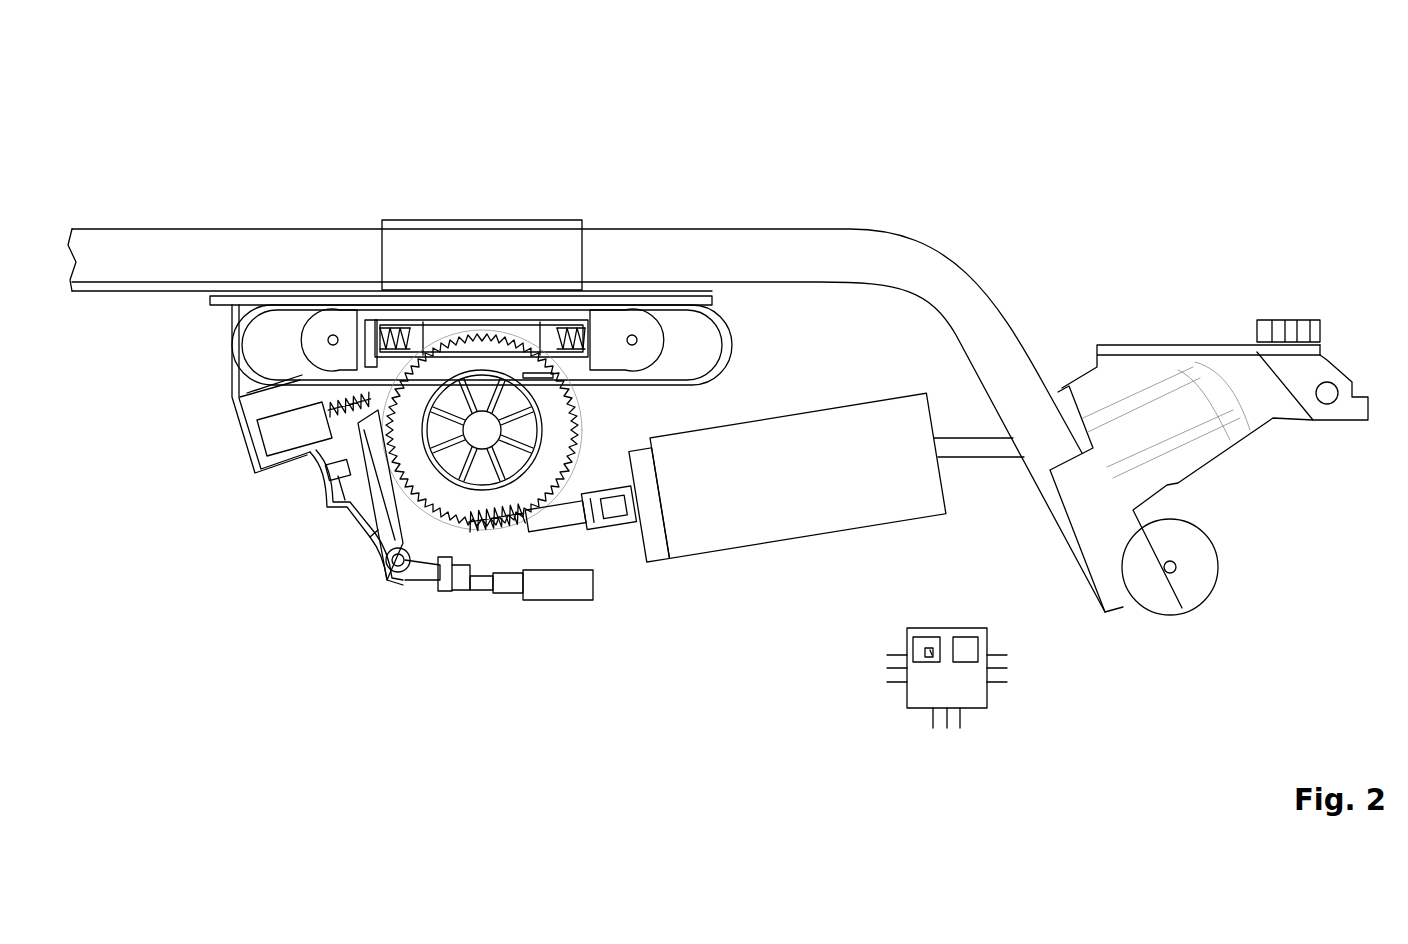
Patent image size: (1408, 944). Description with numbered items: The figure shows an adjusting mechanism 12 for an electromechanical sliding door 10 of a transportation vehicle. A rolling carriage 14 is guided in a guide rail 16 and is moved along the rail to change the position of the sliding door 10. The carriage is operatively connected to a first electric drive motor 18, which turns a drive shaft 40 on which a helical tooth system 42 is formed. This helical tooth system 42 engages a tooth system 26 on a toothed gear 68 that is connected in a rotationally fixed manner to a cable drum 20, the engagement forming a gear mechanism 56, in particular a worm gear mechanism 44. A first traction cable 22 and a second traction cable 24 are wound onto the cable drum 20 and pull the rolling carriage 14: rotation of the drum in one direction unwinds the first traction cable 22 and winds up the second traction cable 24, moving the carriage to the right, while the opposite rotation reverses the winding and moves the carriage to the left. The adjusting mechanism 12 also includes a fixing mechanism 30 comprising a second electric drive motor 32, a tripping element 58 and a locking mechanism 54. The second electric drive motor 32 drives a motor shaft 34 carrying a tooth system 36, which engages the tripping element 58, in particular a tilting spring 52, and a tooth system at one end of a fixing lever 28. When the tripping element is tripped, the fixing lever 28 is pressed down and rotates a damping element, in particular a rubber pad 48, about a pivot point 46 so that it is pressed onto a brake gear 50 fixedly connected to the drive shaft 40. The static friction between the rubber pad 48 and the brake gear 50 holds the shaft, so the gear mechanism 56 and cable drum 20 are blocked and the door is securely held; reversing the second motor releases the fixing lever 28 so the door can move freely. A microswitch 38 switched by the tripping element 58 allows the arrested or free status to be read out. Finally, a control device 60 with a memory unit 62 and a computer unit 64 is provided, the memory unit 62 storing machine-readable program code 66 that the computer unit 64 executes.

The electromechanical sliding door 10 is at (150, 182).
The adjusting mechanism 12 is at (1112, 188).
The rolling carriage 14 is at (1145, 415).
The guide rail 16 is at (910, 260).
The first electric drive motor 18 is at (805, 430).
The cable drum 20 is at (542, 425).
The first traction cable 22 is at (395, 345).
The second traction cable 24 is at (525, 375).
The tooth system 26 is at (458, 335).
The fixing lever 28 is at (380, 492).
The fixing mechanism 30 is at (214, 421).
The second electric drive motor 32 is at (275, 428).
The motor shaft 34 is at (380, 400).
The tooth system 36 is at (305, 462).
The microswitch 38 is at (343, 495).
The drive shaft 40 is at (560, 556).
The helical tooth system 42 is at (535, 550).
The worm gear mechanism 44 is at (510, 547).
The pivot point 46 is at (398, 573).
The rubber pad 48 is at (438, 562).
The brake gear 50 is at (466, 582).
The tilting spring 52 is at (380, 540).
The locking mechanism 54 is at (423, 566).
The gear mechanism 56 is at (557, 500).
The tripping element 58 is at (380, 540).
The control device 60 is at (985, 729).
The memory unit 62 is at (927, 640).
The computer unit 64 is at (968, 640).
The machine-readable program code 66 is at (928, 655).
The toothed gear 68 is at (545, 462).